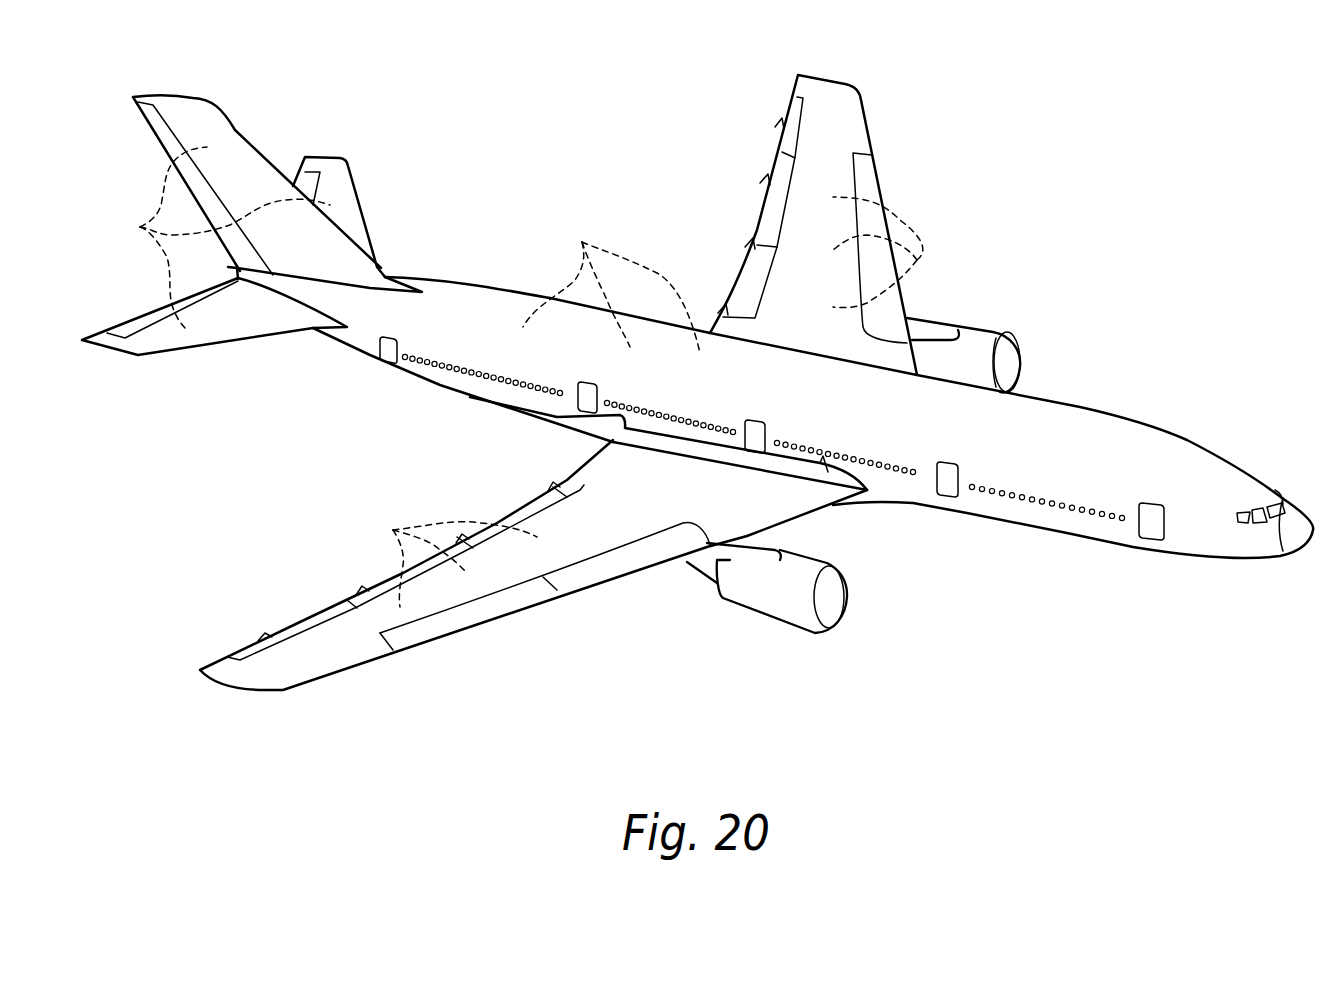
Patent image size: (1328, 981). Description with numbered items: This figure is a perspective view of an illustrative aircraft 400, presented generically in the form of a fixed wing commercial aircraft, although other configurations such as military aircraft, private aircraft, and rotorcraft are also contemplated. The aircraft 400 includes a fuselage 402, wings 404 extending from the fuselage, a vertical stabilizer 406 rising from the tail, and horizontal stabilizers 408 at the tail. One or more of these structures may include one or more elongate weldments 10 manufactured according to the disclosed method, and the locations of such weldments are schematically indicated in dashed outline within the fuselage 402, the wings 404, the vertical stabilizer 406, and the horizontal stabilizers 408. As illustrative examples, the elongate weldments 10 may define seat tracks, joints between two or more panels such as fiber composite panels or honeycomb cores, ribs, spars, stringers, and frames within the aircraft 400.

The aircraft 400 is at (1154, 150).
The fuselage 402 is at (1077, 407).
The wings 404 is at (860, 107).
The vertical stabilizer 406 is at (225, 124).
The horizontal stabilizers 408 is at (372, 203).
The elongate weldment 10 is at (140, 227).